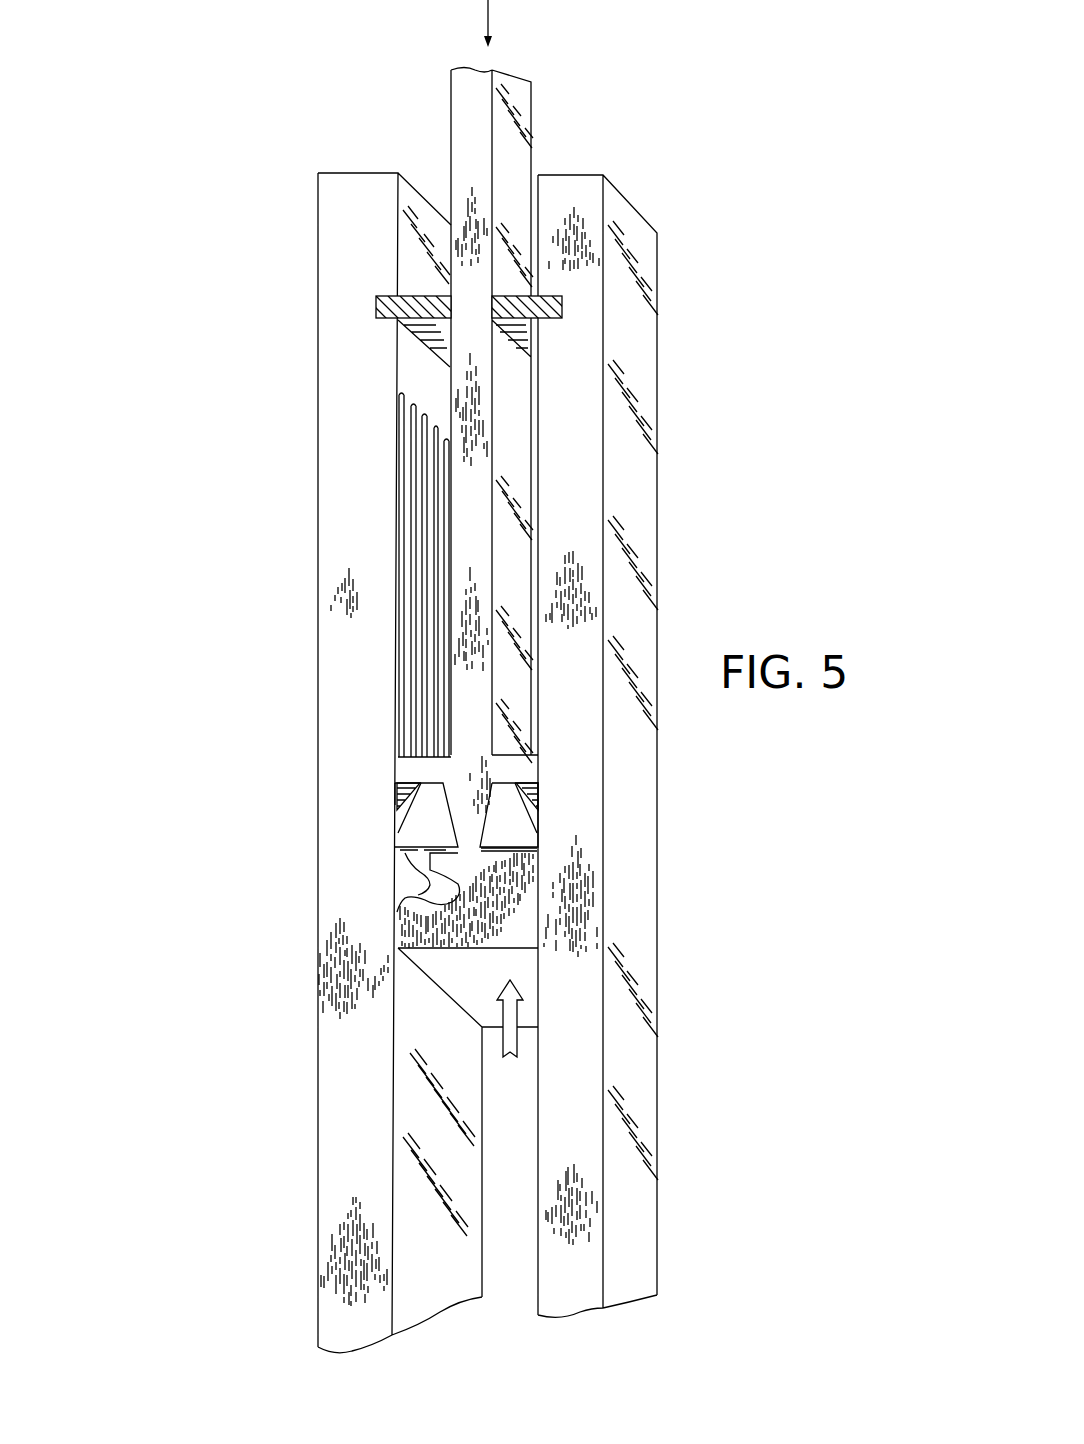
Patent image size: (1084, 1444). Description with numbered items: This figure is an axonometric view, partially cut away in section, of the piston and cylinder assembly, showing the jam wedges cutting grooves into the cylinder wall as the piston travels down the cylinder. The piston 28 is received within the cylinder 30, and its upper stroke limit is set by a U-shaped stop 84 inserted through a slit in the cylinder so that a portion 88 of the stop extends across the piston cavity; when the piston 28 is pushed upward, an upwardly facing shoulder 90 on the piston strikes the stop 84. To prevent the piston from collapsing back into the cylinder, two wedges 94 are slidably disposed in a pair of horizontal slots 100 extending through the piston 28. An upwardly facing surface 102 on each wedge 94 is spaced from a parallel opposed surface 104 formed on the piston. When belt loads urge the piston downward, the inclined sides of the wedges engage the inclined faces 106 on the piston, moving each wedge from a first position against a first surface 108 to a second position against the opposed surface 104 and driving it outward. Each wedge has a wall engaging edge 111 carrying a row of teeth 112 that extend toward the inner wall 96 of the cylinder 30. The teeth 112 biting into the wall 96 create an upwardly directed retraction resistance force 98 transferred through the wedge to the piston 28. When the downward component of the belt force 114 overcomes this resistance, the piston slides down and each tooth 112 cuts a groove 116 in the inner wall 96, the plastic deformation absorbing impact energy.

The piston 28 is at (531, 110).
The cylinder 30 is at (656, 297).
The U-shaped stop 84 is at (413, 295).
The portion of the stop 88 is at (425, 325).
The upwardly facing shoulder 90 is at (515, 752).
The wedge 94 is at (410, 833).
The inner wall of the cylinder 96 is at (418, 193).
The retraction resistance force 98 is at (512, 1035).
The horizontal slot 100 is at (410, 783).
The upwardly facing surface 102 is at (435, 783).
The opposed surface 104 is at (397, 793).
The inclined face 106 is at (436, 821).
The first surface 108 is at (517, 843).
The wall engaging edge 111 is at (437, 887).
The teeth 112 is at (425, 873).
The belt force 114 is at (493, 7).
The groove 116 is at (397, 553).